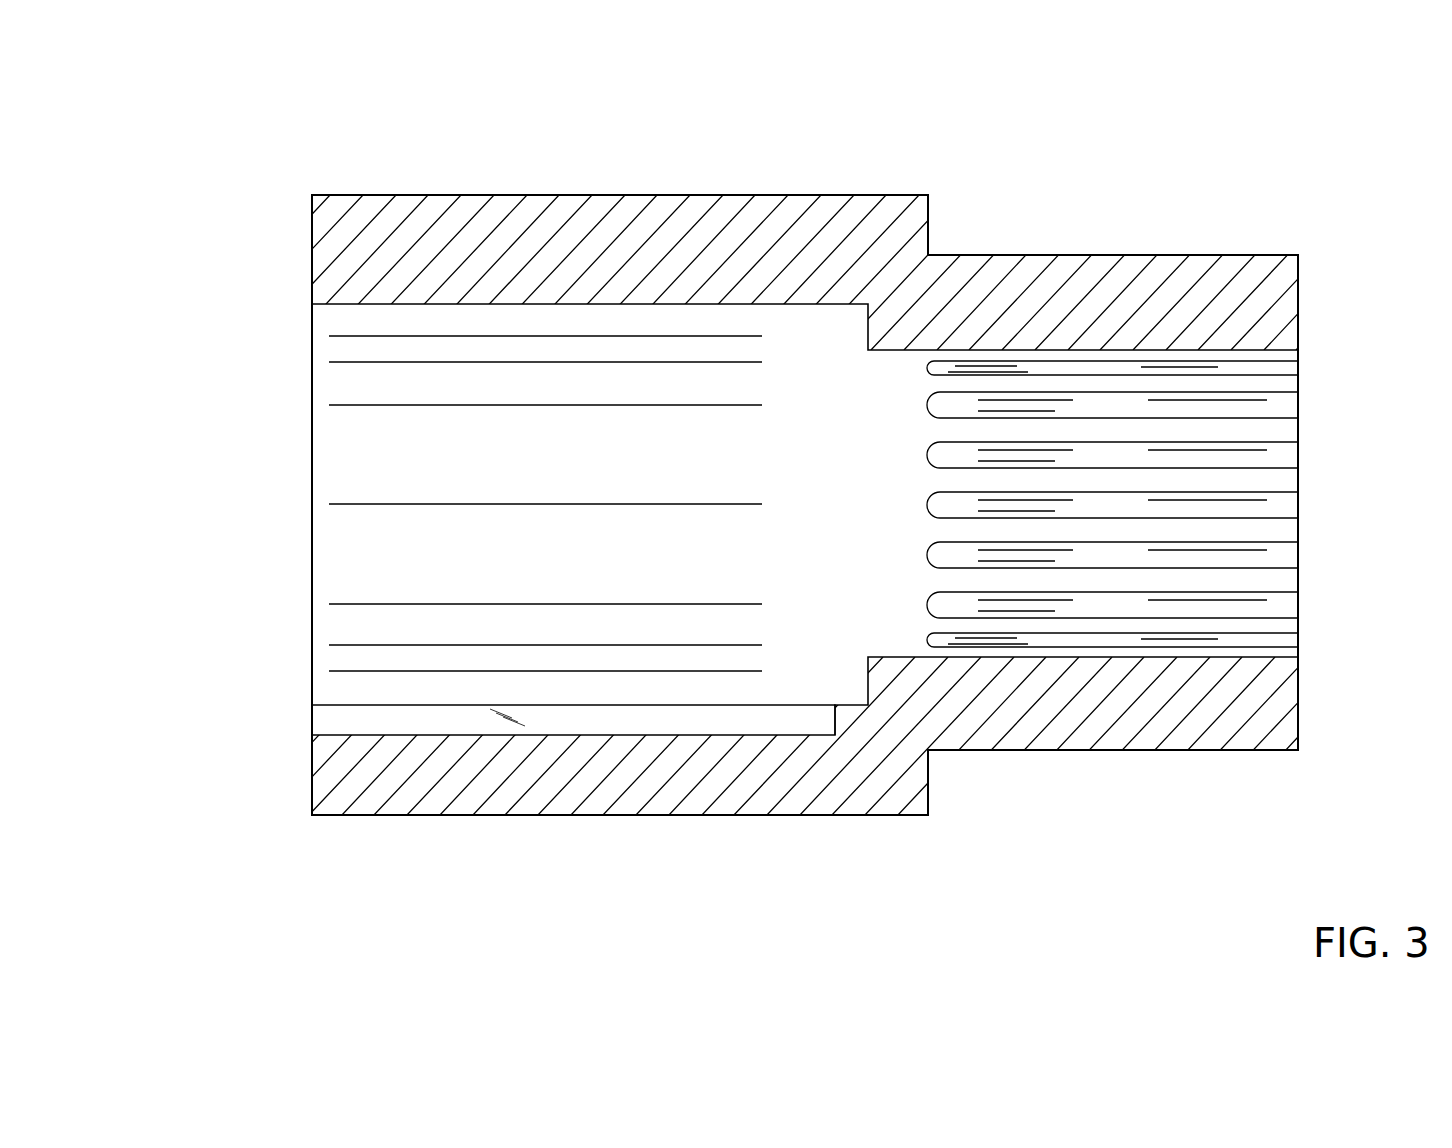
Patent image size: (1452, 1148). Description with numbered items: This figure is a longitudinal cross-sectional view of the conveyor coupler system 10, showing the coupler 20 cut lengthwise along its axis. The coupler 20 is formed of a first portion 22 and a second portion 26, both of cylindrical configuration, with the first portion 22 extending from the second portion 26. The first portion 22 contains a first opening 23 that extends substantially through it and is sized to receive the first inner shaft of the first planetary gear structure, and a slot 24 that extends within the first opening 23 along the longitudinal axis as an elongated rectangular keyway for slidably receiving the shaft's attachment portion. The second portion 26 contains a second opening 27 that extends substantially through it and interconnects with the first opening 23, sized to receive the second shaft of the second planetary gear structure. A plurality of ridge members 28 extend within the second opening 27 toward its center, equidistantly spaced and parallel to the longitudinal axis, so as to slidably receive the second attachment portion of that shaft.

The conveyor coupler system 10 is at (267, 167).
The coupler 20 is at (687, 815).
The first portion 22 is at (517, 193).
The first opening 23 is at (313, 465).
The slot 24 is at (333, 737).
The second portion 26 is at (1103, 255).
The second opening 27 is at (1298, 429).
The ridge members 28 is at (1290, 505).